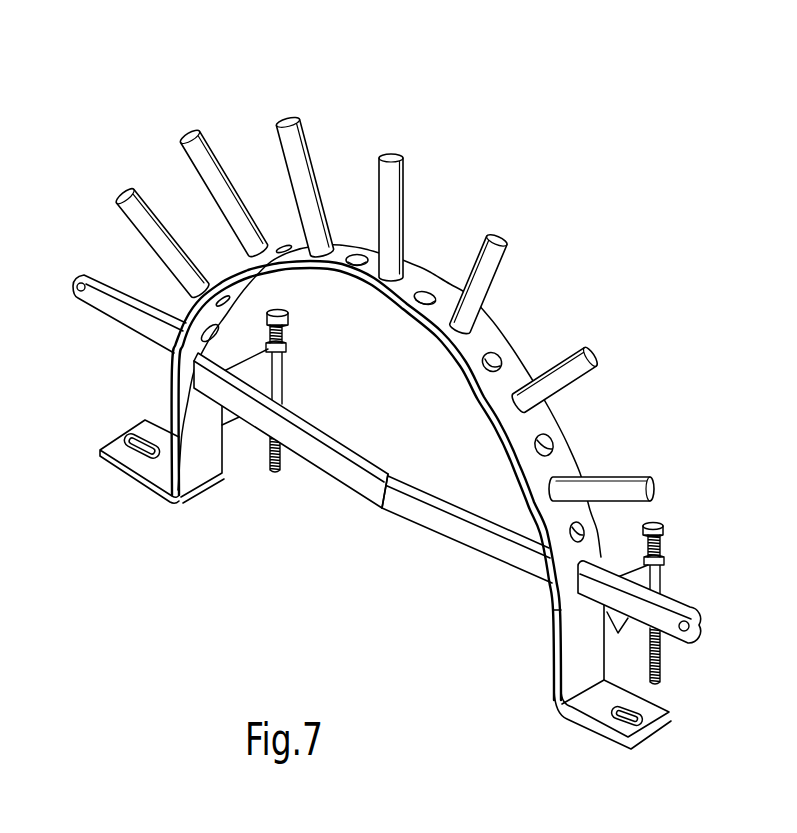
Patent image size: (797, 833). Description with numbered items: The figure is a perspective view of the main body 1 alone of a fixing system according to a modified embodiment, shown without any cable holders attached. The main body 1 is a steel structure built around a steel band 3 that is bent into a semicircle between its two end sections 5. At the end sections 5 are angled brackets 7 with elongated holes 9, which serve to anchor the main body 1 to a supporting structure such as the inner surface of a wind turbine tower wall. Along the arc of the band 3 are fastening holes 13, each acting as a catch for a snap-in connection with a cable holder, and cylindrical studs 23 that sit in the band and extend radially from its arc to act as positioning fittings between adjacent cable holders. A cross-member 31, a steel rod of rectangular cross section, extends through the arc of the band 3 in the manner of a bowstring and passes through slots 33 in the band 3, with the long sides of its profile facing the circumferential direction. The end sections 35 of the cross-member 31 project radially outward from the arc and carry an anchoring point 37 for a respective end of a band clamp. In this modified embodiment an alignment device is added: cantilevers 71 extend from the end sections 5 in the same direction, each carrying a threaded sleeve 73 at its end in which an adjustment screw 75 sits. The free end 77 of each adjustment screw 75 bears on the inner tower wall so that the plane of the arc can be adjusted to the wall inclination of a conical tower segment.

The main body 1 is at (280, 616).
The steel band 3 is at (562, 470).
The end sections 5 is at (200, 470).
The angled brackets 7 is at (150, 474).
The elongated holes 9 is at (140, 447).
The fastening holes 13 is at (358, 254).
The cylindrical studs 23 is at (196, 134).
The cross-member 31 is at (352, 468).
The slots 33 is at (200, 374).
The end sections of the cross-member 35 is at (153, 313).
The anchoring point 37 is at (78, 287).
The cantilevers 71 is at (260, 368).
The threaded sleeve 73 is at (283, 383).
The adjustment screw 75 is at (287, 336).
The free end 77 is at (273, 470).